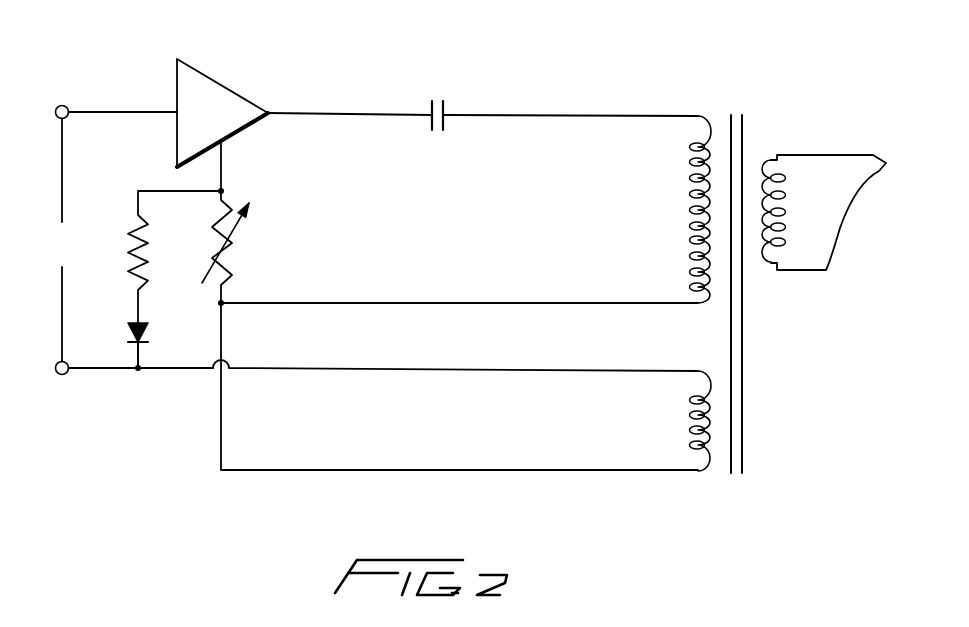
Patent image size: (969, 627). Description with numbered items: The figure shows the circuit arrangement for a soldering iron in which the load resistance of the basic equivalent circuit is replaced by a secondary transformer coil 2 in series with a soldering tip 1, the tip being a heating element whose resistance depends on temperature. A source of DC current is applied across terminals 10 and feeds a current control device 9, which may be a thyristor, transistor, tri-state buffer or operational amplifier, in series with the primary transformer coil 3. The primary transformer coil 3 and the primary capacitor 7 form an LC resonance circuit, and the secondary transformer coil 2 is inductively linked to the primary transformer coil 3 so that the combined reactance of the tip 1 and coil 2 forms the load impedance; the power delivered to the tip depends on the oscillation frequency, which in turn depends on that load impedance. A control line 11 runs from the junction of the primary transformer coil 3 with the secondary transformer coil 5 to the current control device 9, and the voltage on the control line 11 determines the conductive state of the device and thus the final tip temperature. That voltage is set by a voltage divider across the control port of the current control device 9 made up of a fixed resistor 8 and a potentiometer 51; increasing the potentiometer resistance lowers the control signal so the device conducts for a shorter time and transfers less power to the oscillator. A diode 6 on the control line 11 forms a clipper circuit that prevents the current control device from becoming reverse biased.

The soldering tip 1 is at (877, 153).
The secondary transformer coil 2 is at (780, 222).
The primary transformer coil 3 is at (693, 212).
The secondary transformer coil 5 is at (692, 421).
The diode 6 is at (126, 336).
The primary capacitor 7 is at (447, 107).
The fixed resistor 8 is at (131, 250).
The current control device 9 is at (217, 83).
The terminals 10 is at (130, 240).
The control line 11 is at (222, 167).
The potentiometer 51 is at (228, 260).